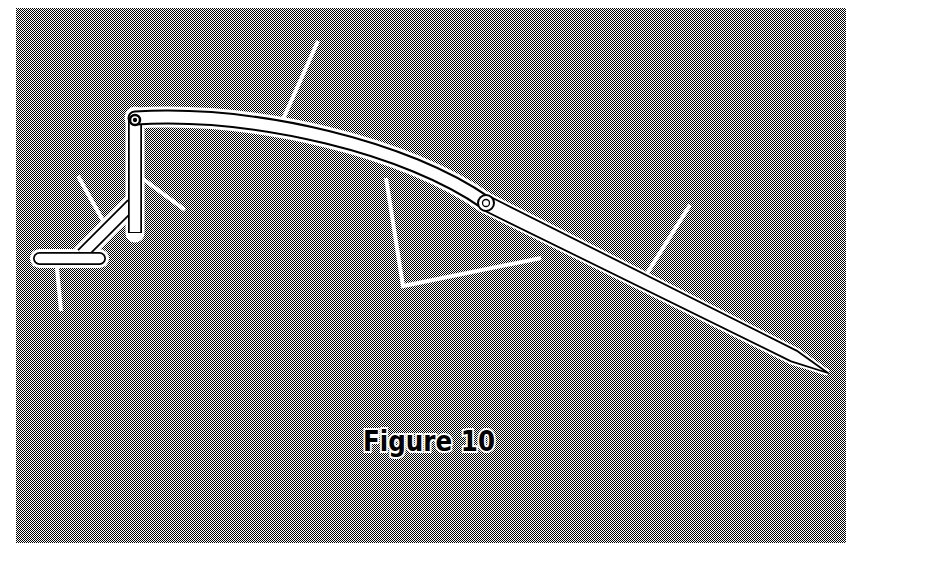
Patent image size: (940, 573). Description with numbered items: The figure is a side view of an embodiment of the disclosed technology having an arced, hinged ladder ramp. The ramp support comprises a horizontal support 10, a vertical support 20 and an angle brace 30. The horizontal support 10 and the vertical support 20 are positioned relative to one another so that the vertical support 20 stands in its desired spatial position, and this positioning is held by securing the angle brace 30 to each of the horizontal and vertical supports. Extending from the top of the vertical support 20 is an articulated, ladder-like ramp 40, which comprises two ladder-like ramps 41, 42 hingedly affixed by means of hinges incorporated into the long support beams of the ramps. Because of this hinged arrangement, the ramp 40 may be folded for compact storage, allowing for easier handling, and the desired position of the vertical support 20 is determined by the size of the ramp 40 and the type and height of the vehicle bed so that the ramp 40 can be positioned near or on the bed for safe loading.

The horizontal support 10 is at (48, 250).
The vertical support 20 is at (127, 165).
The angle brace 30 is at (98, 218).
The ladder-like ramp 40 is at (479, 195).
The ladder-like ramp 41 is at (272, 118).
The ladder-like ramp 42 is at (633, 275).